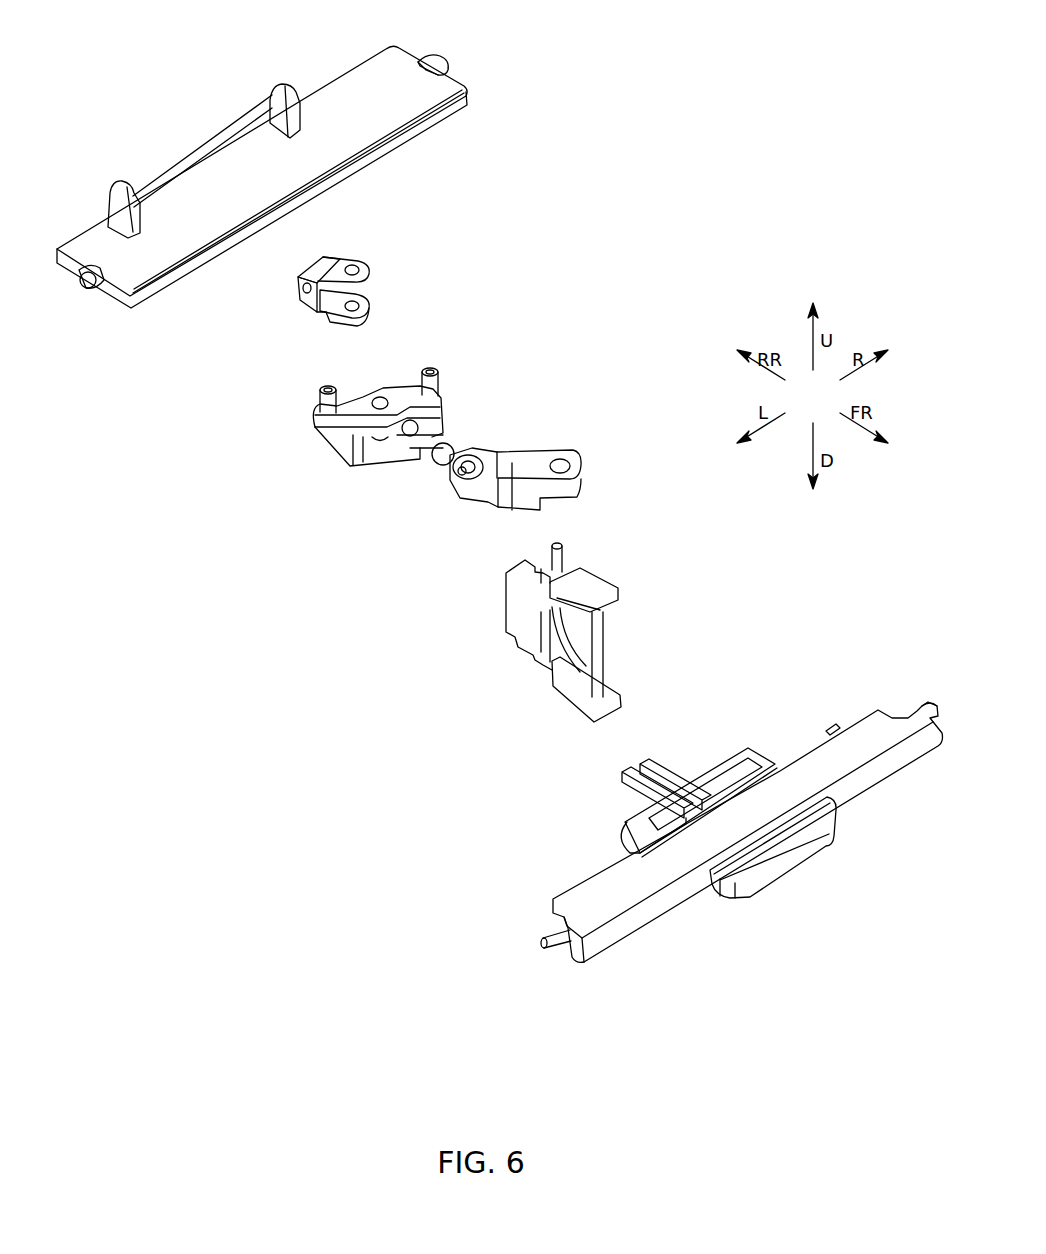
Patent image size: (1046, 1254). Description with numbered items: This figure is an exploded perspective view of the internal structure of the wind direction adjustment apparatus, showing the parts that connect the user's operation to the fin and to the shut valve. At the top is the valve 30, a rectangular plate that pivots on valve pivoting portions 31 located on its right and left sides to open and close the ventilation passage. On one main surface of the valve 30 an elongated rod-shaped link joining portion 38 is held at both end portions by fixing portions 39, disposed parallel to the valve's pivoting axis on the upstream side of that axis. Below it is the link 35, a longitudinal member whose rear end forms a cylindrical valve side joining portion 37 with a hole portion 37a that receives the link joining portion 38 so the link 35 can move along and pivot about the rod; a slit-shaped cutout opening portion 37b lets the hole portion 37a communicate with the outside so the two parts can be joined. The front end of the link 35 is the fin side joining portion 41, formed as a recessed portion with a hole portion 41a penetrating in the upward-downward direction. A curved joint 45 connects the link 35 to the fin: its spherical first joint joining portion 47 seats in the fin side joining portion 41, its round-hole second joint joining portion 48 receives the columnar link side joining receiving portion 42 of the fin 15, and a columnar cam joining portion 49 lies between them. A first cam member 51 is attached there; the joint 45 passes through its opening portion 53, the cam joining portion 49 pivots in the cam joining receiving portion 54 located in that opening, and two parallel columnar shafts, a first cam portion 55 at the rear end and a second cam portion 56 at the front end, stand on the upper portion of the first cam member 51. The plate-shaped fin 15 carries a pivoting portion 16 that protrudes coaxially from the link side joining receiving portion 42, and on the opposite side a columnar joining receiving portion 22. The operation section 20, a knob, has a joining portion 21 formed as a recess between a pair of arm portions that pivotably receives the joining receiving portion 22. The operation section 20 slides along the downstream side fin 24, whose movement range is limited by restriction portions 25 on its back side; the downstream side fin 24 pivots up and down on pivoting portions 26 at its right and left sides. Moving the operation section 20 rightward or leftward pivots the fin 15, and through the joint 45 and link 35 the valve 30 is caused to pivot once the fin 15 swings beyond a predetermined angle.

The fin 15 is at (579, 618).
The pivoting portion 16 is at (558, 545).
The operation section 20 is at (793, 870).
The joining portion 21 is at (647, 767).
The joining receiving portion 22 is at (600, 632).
The downstream side fin 24 is at (742, 831).
The restriction portion 25 is at (832, 735).
The pivoting portion 26 is at (926, 702).
The valve 30 is at (238, 208).
The valve pivoting portion 31 is at (448, 60).
The link 35 is at (365, 307).
The valve side joining portion 37 is at (337, 283).
The hole portion 37a is at (305, 303).
The cutout opening portion 37b is at (303, 283).
The link joining portion 38 is at (210, 143).
The fixing portion 39 is at (288, 88).
The fin side joining portion 41 is at (364, 252).
The hole portion 41a is at (353, 263).
The link side joining receiving portion 42 is at (570, 565).
The joint 45 is at (534, 475).
The first joint joining portion 47 is at (443, 455).
The second joint joining portion 48 is at (578, 467).
The cam joining portion 49 is at (467, 478).
The first cam member 51 is at (373, 430).
The opening portion 53 is at (365, 447).
The cam joining receiving portion 54 is at (380, 398).
The first cam portion 55 is at (320, 398).
The second cam portion 56 is at (433, 382).